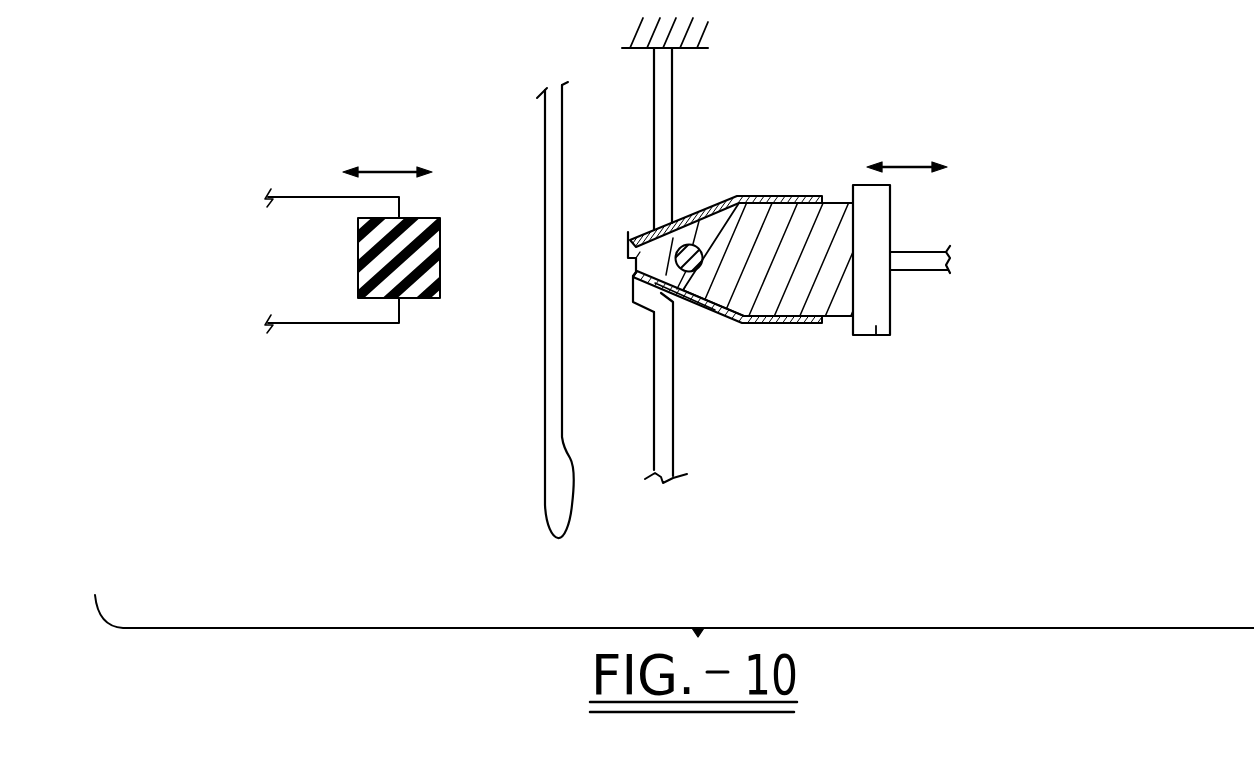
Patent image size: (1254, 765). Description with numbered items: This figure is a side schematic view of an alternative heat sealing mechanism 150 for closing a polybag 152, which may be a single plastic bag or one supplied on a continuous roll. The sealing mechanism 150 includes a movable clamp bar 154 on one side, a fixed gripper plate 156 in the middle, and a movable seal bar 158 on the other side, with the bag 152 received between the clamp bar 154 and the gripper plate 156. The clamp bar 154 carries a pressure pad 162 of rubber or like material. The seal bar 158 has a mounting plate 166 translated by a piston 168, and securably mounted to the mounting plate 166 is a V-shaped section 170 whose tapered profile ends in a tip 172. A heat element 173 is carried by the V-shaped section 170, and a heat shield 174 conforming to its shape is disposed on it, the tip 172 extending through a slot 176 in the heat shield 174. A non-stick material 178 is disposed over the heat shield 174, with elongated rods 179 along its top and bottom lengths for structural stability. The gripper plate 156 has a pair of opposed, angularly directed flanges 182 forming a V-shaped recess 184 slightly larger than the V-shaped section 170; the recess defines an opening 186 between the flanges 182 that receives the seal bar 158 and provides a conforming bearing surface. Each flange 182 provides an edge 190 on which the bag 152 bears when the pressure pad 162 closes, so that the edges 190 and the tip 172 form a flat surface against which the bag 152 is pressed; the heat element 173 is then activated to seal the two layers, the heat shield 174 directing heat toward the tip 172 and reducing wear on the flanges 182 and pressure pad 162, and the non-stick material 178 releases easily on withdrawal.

The sealing mechanism 150 is at (356, 460).
The polybag 152 is at (543, 420).
The clamp bar 154 is at (334, 141).
The gripper plate 156 is at (704, 85).
The seal bar 158 is at (924, 119).
The pressure pad 162 is at (423, 298).
The mounting plate 166 is at (877, 330).
The piston 168 is at (918, 265).
The V-shaped section 170 is at (833, 310).
The tip 172 is at (630, 272).
The heat element 173 is at (694, 221).
The heat shield 174 is at (800, 318).
The slot 176 is at (633, 260).
The non-stick material 178 is at (712, 197).
The elongated rods 179 is at (718, 326).
The flanges 182 is at (641, 228).
The V-shaped recess 184 is at (668, 296).
The opening 186 is at (604, 250).
The edge 190 is at (627, 231).